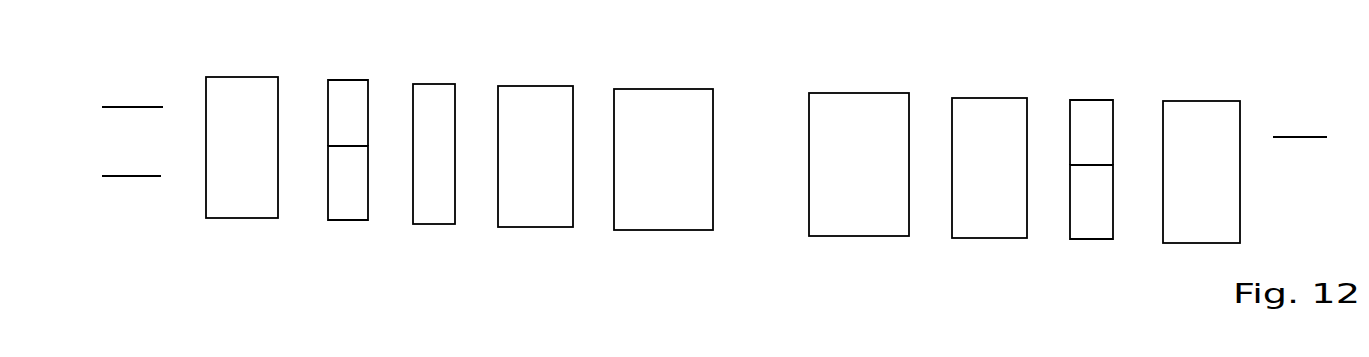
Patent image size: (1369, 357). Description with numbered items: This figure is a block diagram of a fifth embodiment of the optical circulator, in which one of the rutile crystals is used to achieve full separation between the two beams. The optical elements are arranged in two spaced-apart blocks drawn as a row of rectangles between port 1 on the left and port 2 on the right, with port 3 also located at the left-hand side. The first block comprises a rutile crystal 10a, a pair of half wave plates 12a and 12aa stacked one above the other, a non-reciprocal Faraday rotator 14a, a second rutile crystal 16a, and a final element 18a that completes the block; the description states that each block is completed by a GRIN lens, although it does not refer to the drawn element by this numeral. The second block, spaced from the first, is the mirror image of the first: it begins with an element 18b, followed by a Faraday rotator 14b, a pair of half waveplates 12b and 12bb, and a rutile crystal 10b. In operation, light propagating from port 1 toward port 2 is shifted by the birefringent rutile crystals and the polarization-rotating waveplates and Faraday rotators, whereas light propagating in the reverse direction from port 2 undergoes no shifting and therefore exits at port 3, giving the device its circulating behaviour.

The port 1 is at (132, 90).
The port 2 is at (1311, 129).
The port 3 is at (131, 158).
The rutile crystal 10a is at (222, 88).
The half wave plate 12a is at (340, 87).
The half wave plate 12aa is at (340, 212).
The non-reciprocal Faraday rotator 14a is at (427, 90).
The rutile crystal 16a is at (515, 95).
The fifth lens element 18a is at (635, 97).
The fifth lens element (second group) 18b is at (825, 105).
The Faraday rotator 14b is at (962, 110).
The half waveplate 12b is at (1082, 108).
The half waveplate 12bb is at (1081, 233).
The rutile crystal 10b is at (1195, 115).